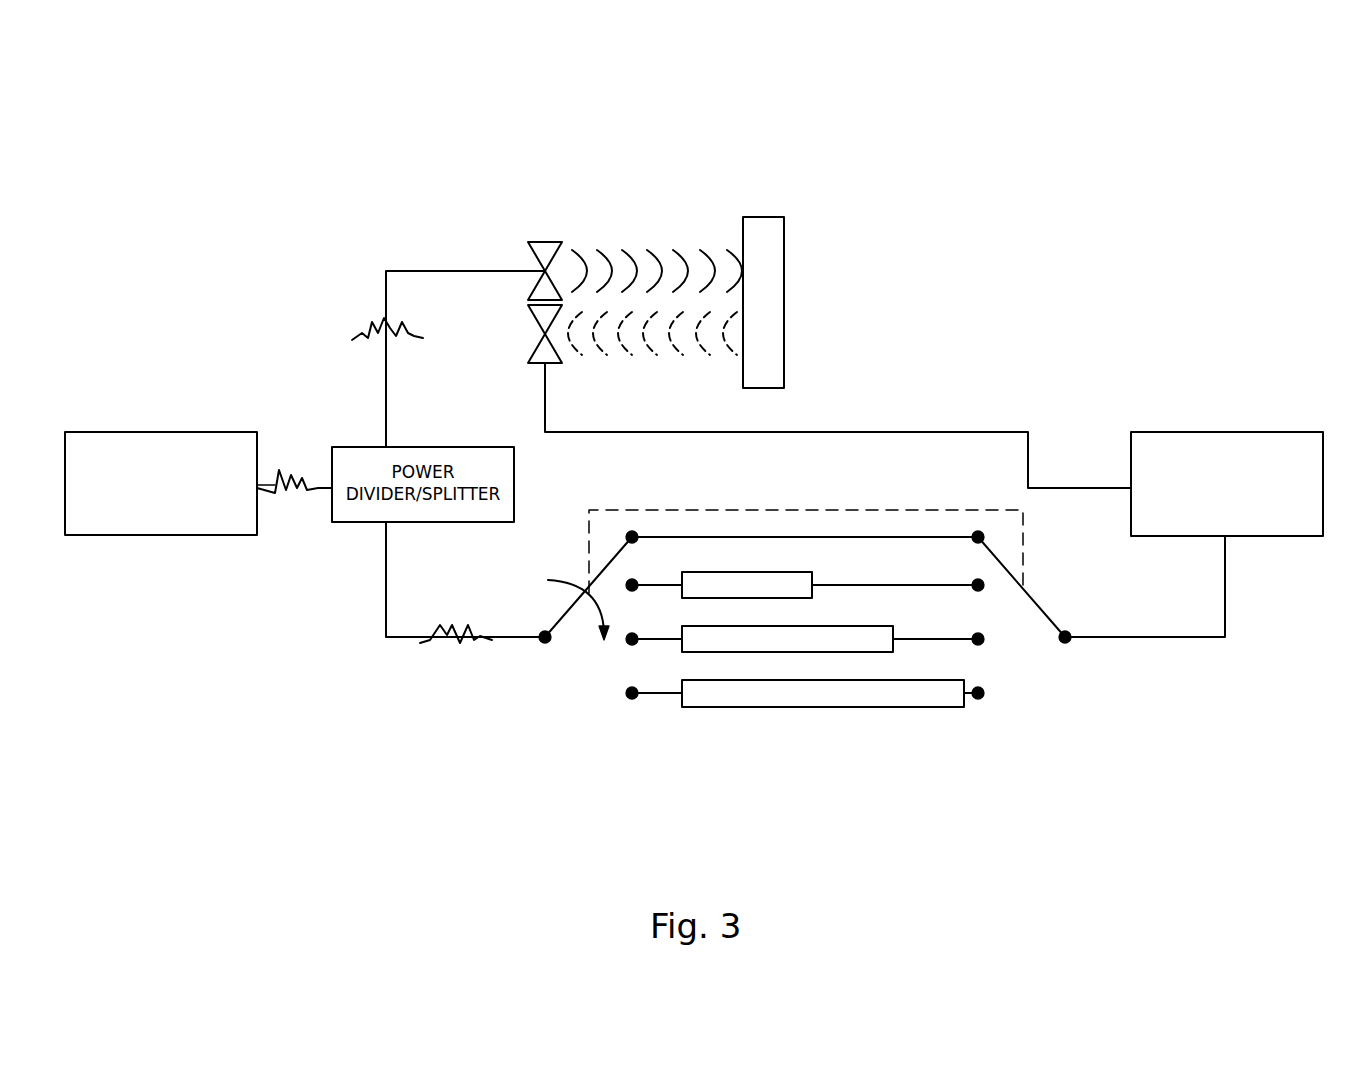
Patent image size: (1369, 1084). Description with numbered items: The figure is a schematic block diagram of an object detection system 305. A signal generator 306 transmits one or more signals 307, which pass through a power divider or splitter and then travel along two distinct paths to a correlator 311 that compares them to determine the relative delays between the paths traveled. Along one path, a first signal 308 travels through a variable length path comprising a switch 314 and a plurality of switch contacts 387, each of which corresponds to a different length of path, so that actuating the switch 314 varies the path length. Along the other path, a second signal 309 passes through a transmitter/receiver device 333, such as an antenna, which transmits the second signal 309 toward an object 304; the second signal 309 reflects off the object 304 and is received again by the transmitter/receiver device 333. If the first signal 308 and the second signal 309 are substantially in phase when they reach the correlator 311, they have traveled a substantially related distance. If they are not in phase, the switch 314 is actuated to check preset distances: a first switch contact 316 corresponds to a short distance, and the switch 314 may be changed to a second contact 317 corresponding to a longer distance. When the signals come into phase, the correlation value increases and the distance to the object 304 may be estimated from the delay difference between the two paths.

The object 304 is at (785, 280).
The object detection system 305 is at (268, 158).
The signal generator 306 is at (112, 445).
The signals 307 is at (280, 483).
The first signal 308 is at (435, 640).
The second signal 309 is at (368, 333).
The correlator 311 is at (1255, 448).
The switch 314 is at (570, 613).
The first switch contact 316 is at (634, 530).
The second contact 317 is at (634, 582).
The transmitter/receiver device 333 is at (542, 240).
The plurality of switch contacts 387 is at (631, 735).